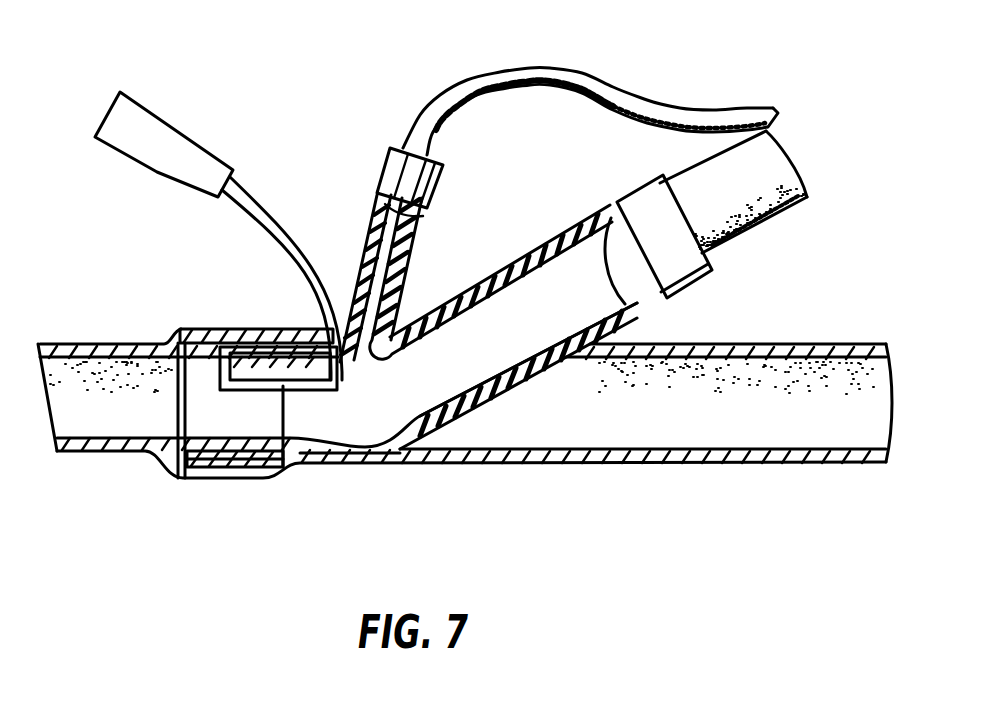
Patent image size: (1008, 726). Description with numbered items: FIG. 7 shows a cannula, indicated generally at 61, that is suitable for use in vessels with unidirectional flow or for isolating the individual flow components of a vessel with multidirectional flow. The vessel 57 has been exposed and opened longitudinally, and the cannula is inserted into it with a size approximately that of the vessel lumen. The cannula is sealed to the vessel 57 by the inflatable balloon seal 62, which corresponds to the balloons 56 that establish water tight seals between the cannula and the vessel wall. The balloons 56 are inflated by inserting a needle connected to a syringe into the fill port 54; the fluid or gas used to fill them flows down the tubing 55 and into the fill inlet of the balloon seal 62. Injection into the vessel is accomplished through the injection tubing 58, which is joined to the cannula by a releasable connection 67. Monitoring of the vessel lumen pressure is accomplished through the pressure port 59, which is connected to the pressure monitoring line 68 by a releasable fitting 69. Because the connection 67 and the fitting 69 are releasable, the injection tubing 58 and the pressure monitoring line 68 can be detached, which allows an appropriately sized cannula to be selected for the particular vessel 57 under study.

The fill port 54 is at (168, 143).
The tubing 55 is at (273, 237).
The balloons 56 is at (290, 466).
The vessel 57 is at (530, 463).
The injection tubing 58 is at (653, 303).
The pressure port 59 is at (412, 242).
The manifold assembly 61 is at (340, 143).
The inflatable balloon seal 62 is at (207, 337).
The releasable connection 67 is at (630, 188).
The pressure monitoring line 68 is at (618, 85).
The releasable fitting 69 is at (380, 171).